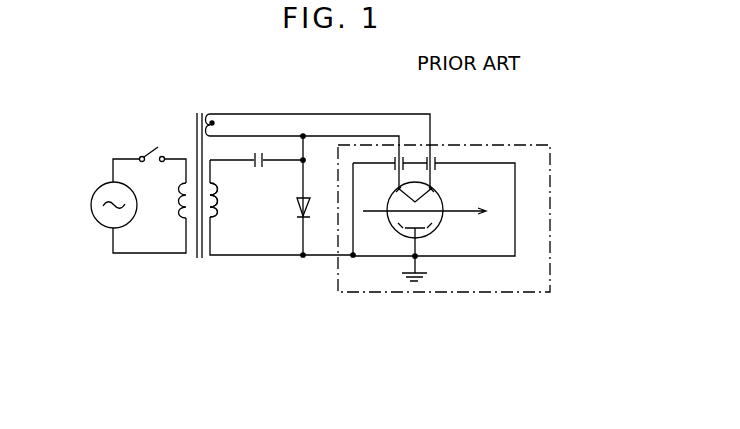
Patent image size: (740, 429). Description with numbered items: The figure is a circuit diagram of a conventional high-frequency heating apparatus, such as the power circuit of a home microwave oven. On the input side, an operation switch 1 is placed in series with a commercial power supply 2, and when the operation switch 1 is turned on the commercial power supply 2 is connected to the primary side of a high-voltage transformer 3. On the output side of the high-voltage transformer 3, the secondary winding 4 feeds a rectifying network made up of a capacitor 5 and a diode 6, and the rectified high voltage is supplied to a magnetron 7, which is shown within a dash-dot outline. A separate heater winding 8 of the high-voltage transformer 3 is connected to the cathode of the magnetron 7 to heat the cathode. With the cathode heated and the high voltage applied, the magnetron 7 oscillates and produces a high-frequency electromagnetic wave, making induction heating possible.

The operation switch 1 is at (147, 150).
The commercial power supply 2 is at (93, 189).
The high-voltage transformer 3 is at (196, 112).
The secondary winding 4 is at (219, 207).
The capacitor 5 is at (258, 172).
The diode 6 is at (312, 203).
The magnetron 7 is at (550, 177).
The heater winding 8 is at (215, 122).